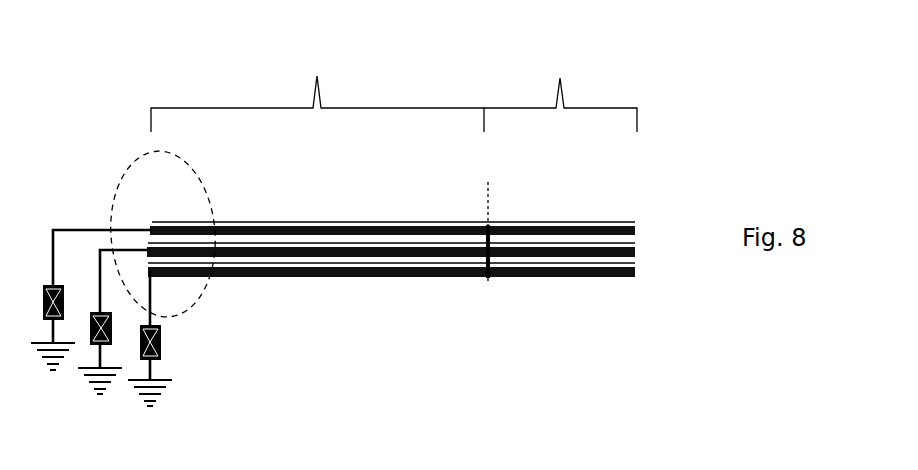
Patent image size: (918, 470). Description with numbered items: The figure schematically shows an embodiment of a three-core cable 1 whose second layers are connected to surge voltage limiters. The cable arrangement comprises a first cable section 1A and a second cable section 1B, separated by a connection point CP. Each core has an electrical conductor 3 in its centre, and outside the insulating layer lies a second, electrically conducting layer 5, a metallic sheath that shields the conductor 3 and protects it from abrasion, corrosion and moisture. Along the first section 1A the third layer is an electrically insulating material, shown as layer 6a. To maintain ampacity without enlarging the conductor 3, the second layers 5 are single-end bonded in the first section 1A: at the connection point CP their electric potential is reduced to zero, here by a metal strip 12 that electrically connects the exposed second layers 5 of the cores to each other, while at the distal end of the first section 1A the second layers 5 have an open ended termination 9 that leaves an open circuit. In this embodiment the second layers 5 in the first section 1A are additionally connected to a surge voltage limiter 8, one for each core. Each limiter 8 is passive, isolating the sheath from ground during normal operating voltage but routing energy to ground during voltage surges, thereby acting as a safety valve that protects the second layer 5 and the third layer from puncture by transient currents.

The cable 1 is at (447, 199).
The first cable section 1A is at (317, 90).
The second cable section 1B is at (560, 93).
The electrical conductor 3 is at (538, 222).
The second electrically conducting layer 5 is at (635, 232).
The electrically insulating third layer 6a is at (637, 255).
The surge voltage limiter 8 is at (82, 393).
The open ended termination 9 is at (127, 168).
The metal strip 12 is at (495, 268).
The connection point CP is at (490, 219).